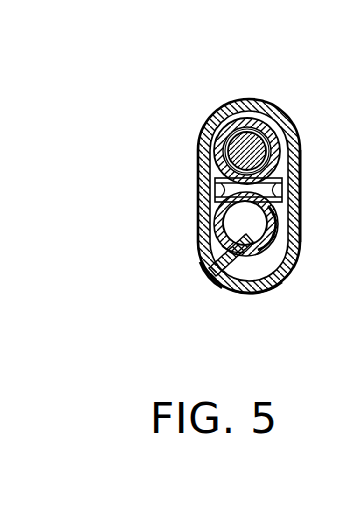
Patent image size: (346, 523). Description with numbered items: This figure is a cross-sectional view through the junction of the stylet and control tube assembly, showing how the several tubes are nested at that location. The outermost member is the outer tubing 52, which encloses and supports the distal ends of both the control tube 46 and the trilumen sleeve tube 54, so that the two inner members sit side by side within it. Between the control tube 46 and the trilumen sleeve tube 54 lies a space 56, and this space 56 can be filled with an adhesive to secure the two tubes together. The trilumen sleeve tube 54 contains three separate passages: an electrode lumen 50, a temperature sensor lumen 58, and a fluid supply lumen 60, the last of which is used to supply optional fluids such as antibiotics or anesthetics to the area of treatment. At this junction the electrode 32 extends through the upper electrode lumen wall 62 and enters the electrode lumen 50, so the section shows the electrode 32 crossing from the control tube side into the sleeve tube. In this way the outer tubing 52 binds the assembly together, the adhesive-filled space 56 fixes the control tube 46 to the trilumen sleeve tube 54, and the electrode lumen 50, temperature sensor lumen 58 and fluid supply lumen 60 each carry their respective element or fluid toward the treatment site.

The electrode 32 is at (199, 152).
The control tube 46 is at (261, 124).
The electrode lumen 50 is at (250, 224).
The outer tubing 52 is at (217, 112).
The trilumen sleeve tube 54 is at (203, 226).
The space 56 is at (296, 172).
The temperature sensor lumen 58 is at (210, 277).
The fluid supply lumen 60 is at (262, 292).
The upper electrode lumen wall 62 is at (214, 201).